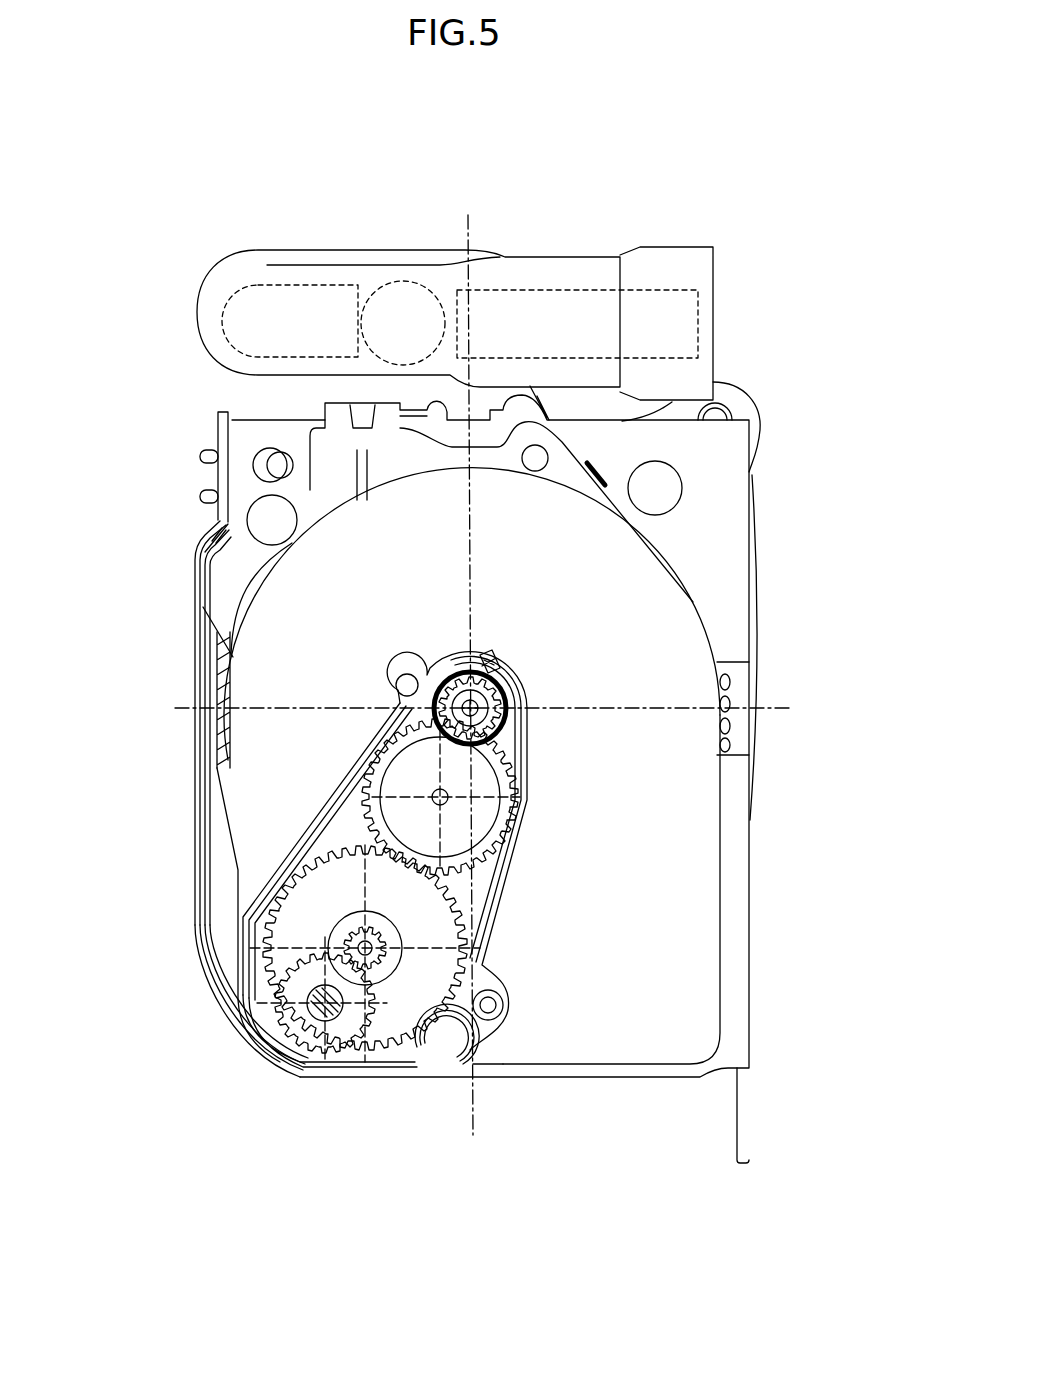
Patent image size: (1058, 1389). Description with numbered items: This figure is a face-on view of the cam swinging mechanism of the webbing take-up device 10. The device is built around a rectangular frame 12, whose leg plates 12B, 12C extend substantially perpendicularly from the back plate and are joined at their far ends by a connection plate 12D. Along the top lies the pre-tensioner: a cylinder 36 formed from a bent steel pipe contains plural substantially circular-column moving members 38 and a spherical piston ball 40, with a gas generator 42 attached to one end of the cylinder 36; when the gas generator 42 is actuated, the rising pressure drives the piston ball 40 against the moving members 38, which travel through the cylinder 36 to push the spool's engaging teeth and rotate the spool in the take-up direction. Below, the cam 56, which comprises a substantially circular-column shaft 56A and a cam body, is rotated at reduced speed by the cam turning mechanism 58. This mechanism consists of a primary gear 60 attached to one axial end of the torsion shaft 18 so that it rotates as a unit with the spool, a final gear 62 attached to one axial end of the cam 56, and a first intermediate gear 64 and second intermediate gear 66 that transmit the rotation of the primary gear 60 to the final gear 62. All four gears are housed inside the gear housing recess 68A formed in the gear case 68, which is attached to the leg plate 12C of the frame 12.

The webbing take-up device 10 is at (673, 201).
The frame 12 is at (261, 419).
The leg plate 12B is at (752, 400).
The leg plate 12C is at (232, 436).
The connection plate 12D is at (200, 523).
The torsion shaft 18 is at (488, 676).
The cylinder 36 is at (347, 250).
The moving members 38 is at (283, 283).
The piston ball 40 is at (433, 250).
The gas generator 42 is at (558, 290).
The cam 56 is at (311, 1097).
The shaft 56A is at (302, 1000).
The cam turning mechanism 58 is at (481, 878).
The primary gear 60 is at (513, 720).
The final gear 62 is at (368, 1002).
The first intermediate gear 64 is at (527, 823).
The second intermediate gear 66 is at (480, 920).
The gear case 68 is at (684, 585).
The gear housing recess 68A is at (343, 830).